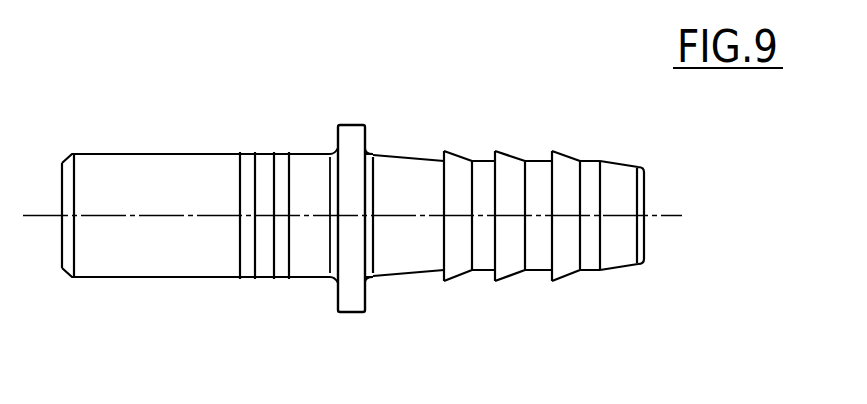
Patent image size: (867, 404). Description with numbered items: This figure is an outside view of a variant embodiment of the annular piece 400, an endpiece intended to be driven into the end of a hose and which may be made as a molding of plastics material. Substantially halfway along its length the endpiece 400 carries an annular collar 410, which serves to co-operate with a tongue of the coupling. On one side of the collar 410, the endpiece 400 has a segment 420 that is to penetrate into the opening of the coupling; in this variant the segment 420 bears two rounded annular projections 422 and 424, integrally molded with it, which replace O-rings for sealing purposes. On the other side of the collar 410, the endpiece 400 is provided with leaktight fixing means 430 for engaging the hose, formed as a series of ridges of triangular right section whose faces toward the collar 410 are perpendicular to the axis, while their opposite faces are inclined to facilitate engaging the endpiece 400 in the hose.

The annular piece 400 is at (80, 128).
The annular collar 410 is at (350, 128).
The segment 420 is at (162, 294).
The rounded annular projection 422 is at (246, 153).
The rounded annular projection 424 is at (288, 153).
The leaktight fixing means 430 is at (547, 136).